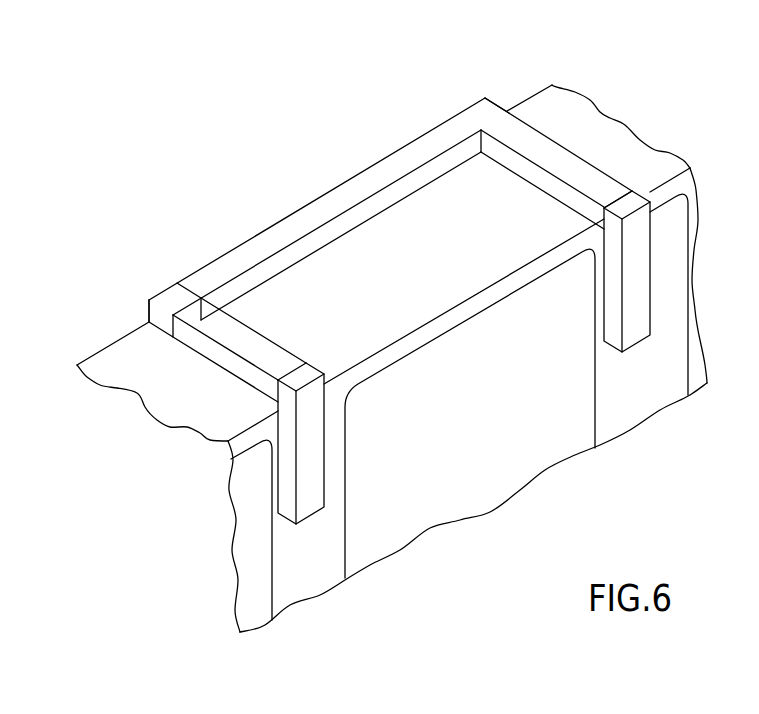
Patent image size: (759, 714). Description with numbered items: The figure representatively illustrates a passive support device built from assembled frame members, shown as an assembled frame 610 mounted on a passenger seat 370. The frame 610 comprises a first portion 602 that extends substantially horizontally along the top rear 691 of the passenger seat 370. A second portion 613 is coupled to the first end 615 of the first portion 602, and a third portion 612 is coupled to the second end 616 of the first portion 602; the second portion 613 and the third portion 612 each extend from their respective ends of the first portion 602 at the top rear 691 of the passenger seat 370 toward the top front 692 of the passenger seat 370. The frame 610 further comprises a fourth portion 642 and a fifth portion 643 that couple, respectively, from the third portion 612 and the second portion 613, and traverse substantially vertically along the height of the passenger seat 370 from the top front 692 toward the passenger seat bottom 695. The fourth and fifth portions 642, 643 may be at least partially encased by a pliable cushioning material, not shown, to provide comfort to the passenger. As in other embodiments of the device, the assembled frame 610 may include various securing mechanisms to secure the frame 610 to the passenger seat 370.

The passenger seat 370 is at (117, 353).
The first portion 602 is at (280, 230).
The assembled frame 610 is at (365, 282).
The third portion 612 is at (571, 162).
The second portion 613 is at (210, 352).
The first end 615 is at (160, 308).
The second end 616 is at (493, 98).
The fourth portion 642 is at (608, 312).
The fifth portion 643 is at (317, 460).
The top rear 691 is at (130, 302).
The top front 692 is at (258, 404).
The passenger seat bottom 695 is at (546, 462).